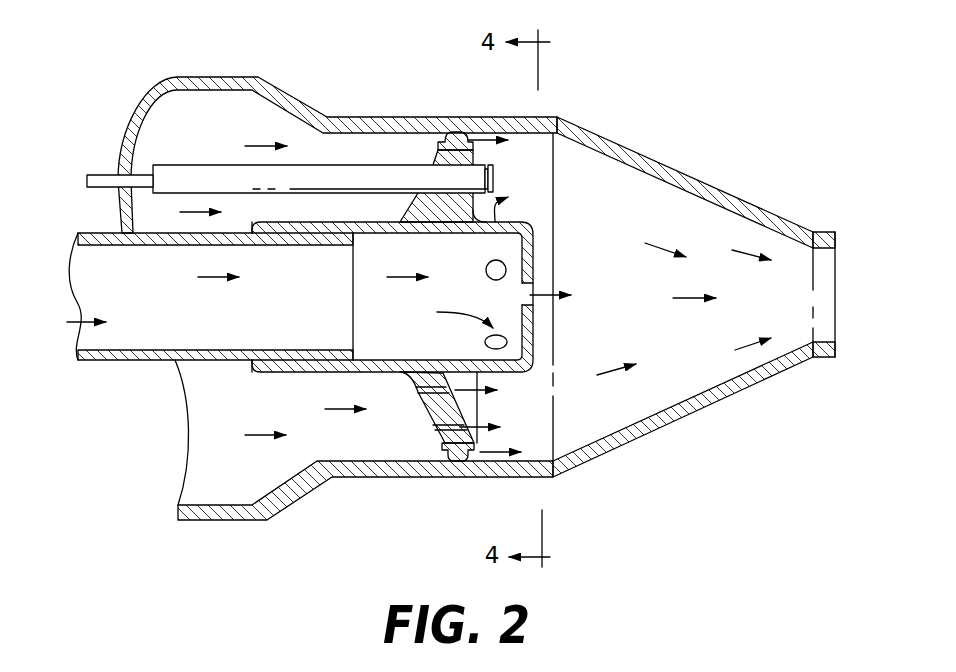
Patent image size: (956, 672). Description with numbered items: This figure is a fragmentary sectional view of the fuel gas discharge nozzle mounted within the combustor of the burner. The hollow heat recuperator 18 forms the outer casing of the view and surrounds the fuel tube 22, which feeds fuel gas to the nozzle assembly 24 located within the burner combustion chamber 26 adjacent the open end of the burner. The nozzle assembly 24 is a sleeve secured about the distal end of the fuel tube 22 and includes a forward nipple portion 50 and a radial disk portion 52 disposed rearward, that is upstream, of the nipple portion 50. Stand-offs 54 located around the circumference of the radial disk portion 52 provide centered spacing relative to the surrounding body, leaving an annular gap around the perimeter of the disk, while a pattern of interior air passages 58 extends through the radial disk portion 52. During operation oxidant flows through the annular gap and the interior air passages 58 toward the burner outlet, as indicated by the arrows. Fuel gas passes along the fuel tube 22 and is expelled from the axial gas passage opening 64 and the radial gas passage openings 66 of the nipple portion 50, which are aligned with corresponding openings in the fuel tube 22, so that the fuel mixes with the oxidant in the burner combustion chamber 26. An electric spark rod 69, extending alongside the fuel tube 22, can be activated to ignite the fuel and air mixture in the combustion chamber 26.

The heat recuperator 18 is at (257, 77).
The fuel tube 22 is at (127, 362).
The nozzle assembly 24 is at (541, 237).
The burner combustion chamber 26 is at (680, 359).
The forward nipple portion 50 is at (523, 372).
The radial disk portion 52 is at (437, 156).
The stand-offs 54 is at (456, 141).
The interior air passages 58 is at (432, 440).
The axial gas passage opening 64 is at (553, 284).
The radial gas passage openings 66 is at (463, 266).
The electric spark rod 69 is at (356, 165).